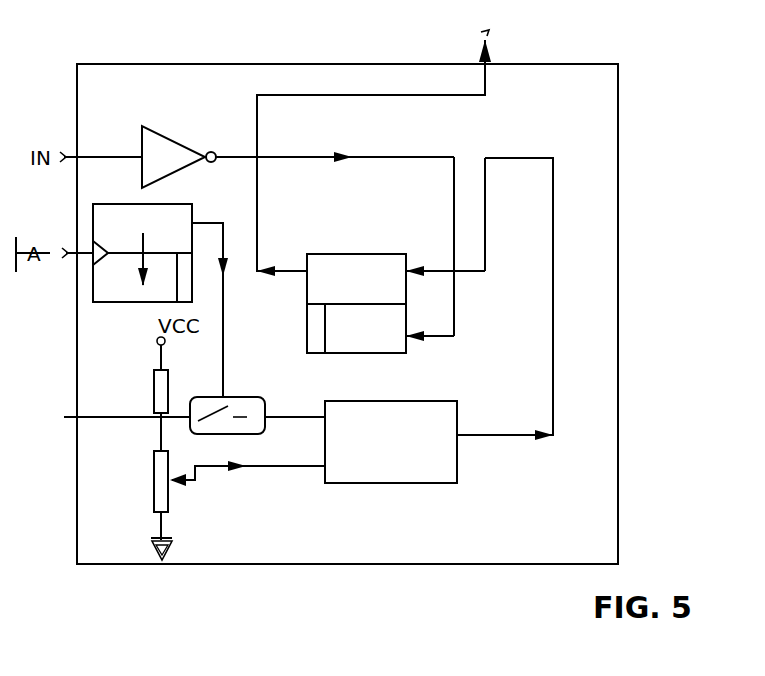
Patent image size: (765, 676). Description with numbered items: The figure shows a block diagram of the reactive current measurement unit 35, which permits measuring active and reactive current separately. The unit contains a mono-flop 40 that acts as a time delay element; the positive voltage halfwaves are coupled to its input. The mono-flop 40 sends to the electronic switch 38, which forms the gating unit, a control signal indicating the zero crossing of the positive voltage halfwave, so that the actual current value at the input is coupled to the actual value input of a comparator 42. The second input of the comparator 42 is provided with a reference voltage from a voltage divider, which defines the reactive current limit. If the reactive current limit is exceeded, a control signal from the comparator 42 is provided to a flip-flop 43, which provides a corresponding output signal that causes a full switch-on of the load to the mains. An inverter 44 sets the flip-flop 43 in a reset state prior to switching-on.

The reactive current measurement unit 35 is at (628, 288).
The inverter 44 is at (166, 144).
The flip-flop 43 is at (348, 266).
The mono-flop 40 is at (118, 298).
The electronic switch 38 is at (255, 397).
The comparator 42 is at (404, 452).